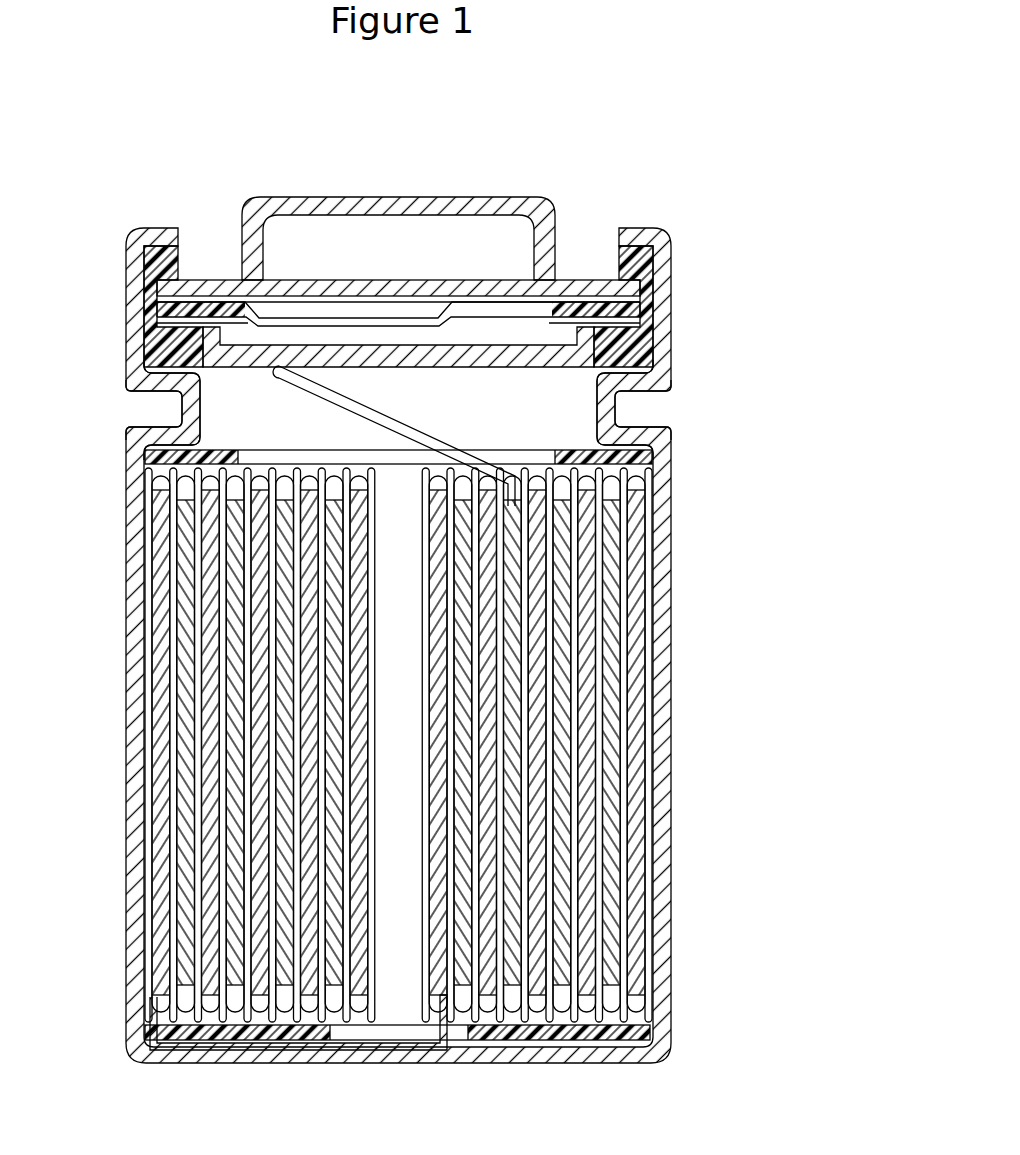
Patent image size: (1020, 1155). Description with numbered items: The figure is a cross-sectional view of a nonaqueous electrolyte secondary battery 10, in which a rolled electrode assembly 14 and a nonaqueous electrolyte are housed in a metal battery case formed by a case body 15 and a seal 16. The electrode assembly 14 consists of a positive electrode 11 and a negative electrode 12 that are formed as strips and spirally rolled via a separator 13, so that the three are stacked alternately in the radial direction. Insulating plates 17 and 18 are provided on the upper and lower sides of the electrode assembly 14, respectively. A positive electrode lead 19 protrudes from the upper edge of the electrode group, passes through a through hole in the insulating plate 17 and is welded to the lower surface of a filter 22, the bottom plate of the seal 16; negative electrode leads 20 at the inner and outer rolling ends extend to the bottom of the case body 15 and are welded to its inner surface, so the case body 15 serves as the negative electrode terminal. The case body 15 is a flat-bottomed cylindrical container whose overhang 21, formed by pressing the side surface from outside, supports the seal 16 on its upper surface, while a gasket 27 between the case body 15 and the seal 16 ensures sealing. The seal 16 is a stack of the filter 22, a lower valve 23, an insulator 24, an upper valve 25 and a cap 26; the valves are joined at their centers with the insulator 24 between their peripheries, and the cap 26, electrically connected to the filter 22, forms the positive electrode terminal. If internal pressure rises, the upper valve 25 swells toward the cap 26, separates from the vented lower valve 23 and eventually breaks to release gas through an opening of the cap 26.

The nonaqueous electrolyte secondary battery 10 is at (670, 106).
The positive electrode 11 is at (615, 702).
The negative electrode 12 is at (649, 749).
The separator 13 is at (600, 797).
The electrode assembly 14 is at (487, 745).
The case body 15 is at (667, 231).
The seal 16 is at (542, 196).
The insulating plate 17 is at (640, 458).
The insulating plate 18 is at (655, 1033).
The positive electrode lead 19 is at (230, 418).
The negative electrode lead 20 is at (212, 1048).
The overhang 21 is at (625, 408).
The filter 22 is at (655, 350).
The lower valve 23 is at (340, 315).
The insulator 24 is at (210, 283).
The upper valve 25 is at (257, 293).
The cap 26 is at (486, 200).
The gasket 27 is at (655, 264).